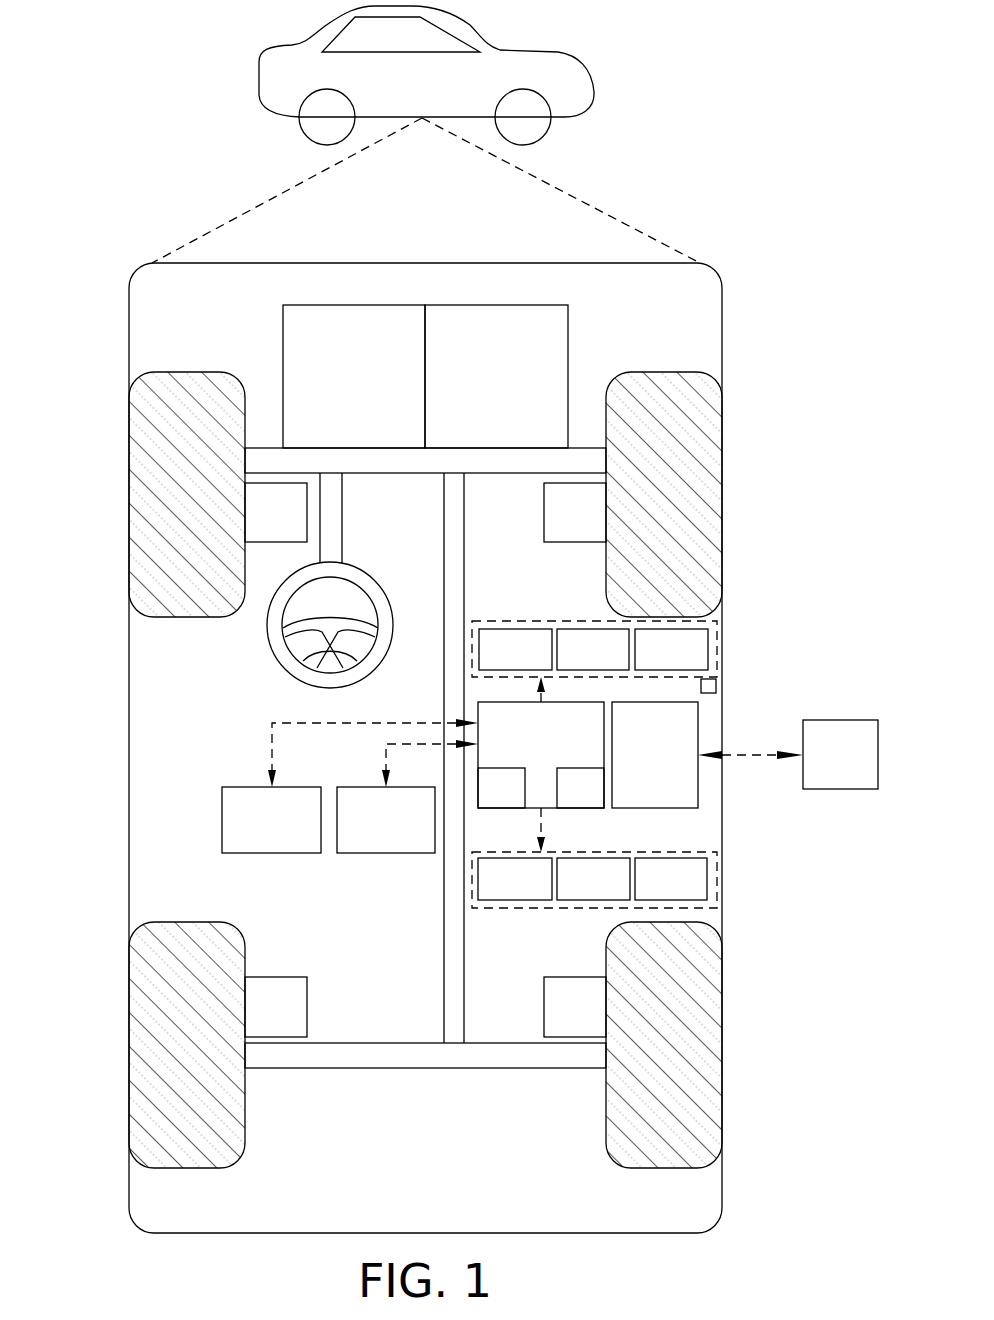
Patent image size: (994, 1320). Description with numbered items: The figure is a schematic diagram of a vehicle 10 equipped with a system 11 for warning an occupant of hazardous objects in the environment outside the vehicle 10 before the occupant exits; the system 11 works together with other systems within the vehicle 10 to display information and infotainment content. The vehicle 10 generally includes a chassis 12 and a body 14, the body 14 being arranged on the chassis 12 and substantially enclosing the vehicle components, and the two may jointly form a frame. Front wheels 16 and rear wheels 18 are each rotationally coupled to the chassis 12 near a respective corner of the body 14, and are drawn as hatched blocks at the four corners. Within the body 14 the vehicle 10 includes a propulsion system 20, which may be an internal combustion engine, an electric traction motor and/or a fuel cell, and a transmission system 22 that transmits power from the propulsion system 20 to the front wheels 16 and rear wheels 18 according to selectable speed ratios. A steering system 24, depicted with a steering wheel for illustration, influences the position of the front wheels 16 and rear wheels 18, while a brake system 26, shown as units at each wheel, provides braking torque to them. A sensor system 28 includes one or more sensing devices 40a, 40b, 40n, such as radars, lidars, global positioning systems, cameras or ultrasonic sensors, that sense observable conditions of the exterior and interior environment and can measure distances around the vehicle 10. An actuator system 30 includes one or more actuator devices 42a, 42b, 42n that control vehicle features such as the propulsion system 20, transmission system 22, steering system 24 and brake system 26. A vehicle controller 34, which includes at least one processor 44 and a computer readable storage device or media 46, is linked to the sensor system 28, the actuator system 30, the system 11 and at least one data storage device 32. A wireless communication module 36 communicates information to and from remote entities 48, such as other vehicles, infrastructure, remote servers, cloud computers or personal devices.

The vehicle 10 is at (412, 96).
The system 11 is at (256, 835).
The chassis 12 is at (444, 950).
The body 14 is at (129, 752).
The front wheels 16 is at (188, 372).
The rear wheels 18 is at (188, 1168).
The propulsion system 20 is at (339, 391).
The transmission system 22 is at (481, 391).
The steering system 24 is at (358, 511).
The brake system 26 is at (261, 527).
The sensor system 28 is at (560, 621).
The actuator system 30 is at (572, 908).
The data storage device 32 is at (371, 835).
The vehicle controller 34 is at (526, 751).
The wireless communication module 36 is at (640, 767).
The sensing device 40a is at (492, 664).
The sensing device 40b is at (570, 664).
The sensing device 40n is at (648, 664).
The actuator device 42a is at (492, 894).
The actuator device 42b is at (570, 894).
The actuator device 42n is at (648, 894).
The processor 44 is at (486, 802).
The computer readable storage device or media 46 is at (565, 802).
The remote entities 48 is at (825, 768).